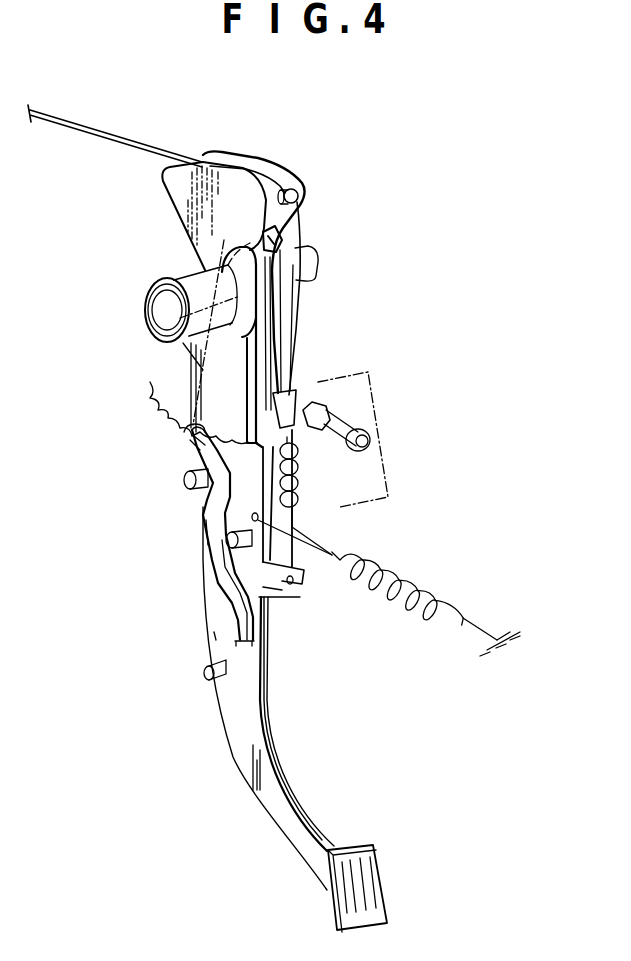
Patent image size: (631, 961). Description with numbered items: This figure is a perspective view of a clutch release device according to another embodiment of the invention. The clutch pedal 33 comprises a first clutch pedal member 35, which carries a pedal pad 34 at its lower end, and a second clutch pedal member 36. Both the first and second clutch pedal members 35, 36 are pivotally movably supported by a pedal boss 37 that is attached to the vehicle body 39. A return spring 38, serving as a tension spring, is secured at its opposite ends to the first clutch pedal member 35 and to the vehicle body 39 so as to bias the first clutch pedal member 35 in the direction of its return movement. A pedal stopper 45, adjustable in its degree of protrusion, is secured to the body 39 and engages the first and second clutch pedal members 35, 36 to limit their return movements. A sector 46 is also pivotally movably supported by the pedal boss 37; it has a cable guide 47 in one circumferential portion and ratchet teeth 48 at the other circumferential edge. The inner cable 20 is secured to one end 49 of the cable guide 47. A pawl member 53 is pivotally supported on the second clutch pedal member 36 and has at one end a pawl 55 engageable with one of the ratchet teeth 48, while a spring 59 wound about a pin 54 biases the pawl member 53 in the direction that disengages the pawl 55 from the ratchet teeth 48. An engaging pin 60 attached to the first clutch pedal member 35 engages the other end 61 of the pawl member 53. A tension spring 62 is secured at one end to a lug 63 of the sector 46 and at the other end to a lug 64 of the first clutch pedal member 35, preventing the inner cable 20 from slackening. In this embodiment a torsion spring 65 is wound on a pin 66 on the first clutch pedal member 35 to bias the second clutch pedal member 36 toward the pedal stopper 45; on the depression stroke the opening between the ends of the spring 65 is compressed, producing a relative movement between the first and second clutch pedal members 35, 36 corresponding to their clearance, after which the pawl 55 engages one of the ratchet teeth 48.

The inner cable 20 is at (97, 124).
The clutch pedal 33 is at (299, 756).
The pedal pad 34 is at (387, 894).
The first clutch pedal member 35 is at (250, 778).
The second clutch pedal member 36 is at (237, 347).
The pedal boss 37 is at (152, 297).
The return spring 38 is at (410, 583).
The vehicle body 39 is at (358, 415).
The pedal stopper 45 is at (306, 496).
The sector 46 is at (183, 222).
The cable guide 47 is at (280, 175).
The ratchet teeth 48 is at (160, 374).
The one end of the cable guide 49 is at (299, 202).
The pawl member 53 is at (193, 522).
The pin 54 is at (184, 485).
The pawl 55 is at (185, 431).
The spring 59 is at (194, 447).
The engaging pin 60 is at (218, 560).
The other end of the pawl member 61 is at (226, 541).
The tension spring 62 is at (299, 505).
The lug of the sector 63 is at (284, 238).
The lug of the first clutch pedal member 64 is at (283, 585).
The torsion spring 65 is at (214, 637).
The pin 66 is at (208, 681).